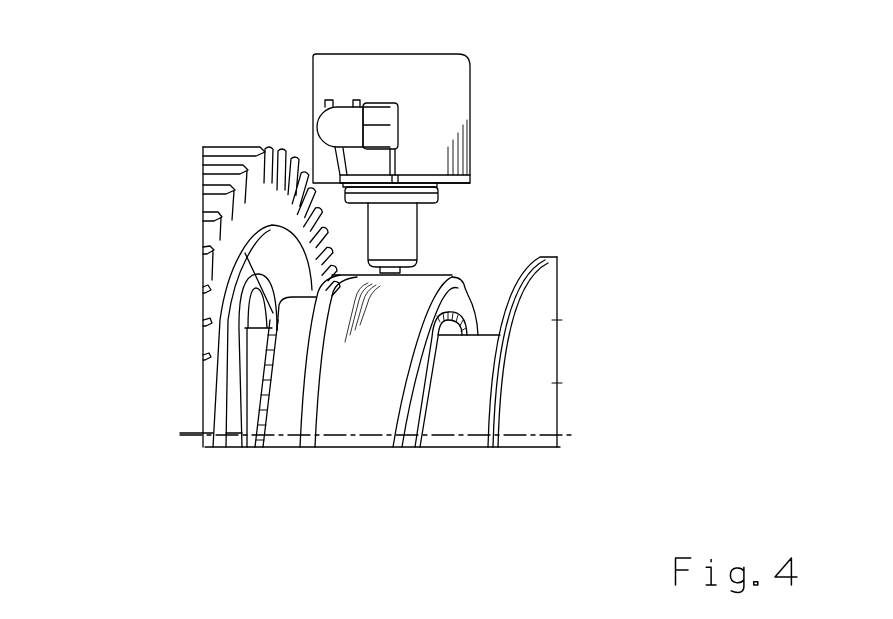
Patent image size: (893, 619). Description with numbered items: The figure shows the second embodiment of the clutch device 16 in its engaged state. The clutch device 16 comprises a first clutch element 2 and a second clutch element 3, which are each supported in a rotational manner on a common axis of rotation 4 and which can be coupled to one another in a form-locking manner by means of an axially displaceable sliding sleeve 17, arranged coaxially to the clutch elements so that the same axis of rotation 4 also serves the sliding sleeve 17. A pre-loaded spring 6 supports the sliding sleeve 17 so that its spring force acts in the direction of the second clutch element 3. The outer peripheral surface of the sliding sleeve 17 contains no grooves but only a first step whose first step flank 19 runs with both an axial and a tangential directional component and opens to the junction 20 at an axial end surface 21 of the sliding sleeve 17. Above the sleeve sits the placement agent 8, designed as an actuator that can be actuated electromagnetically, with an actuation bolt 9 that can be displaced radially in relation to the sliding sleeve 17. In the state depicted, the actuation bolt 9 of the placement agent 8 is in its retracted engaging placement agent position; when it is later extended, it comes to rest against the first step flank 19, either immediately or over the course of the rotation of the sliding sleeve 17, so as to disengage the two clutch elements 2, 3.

The clutch device 16 is at (126, 87).
The axis of rotation 4 is at (196, 432).
The placement agent 8 is at (442, 237).
The actuation bolt 9 is at (428, 308).
The junction 20 is at (335, 283).
The spring 6 is at (233, 413).
The first step flank 19 is at (407, 363).
The first clutch element 2 is at (250, 372).
The second clutch element 3 is at (470, 360).
The axial end surface 21 is at (423, 398).
The sliding sleeve 17 is at (357, 392).